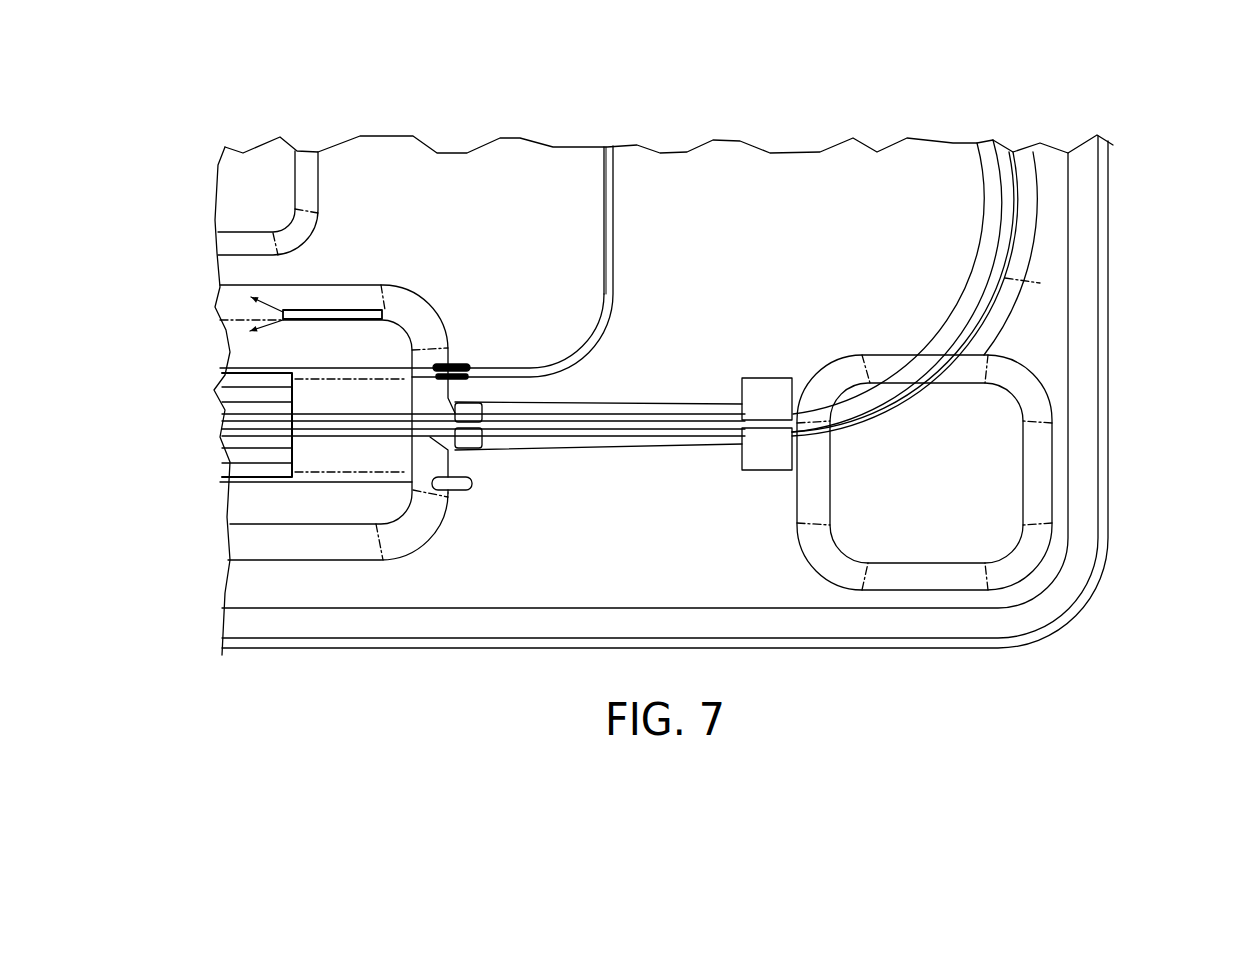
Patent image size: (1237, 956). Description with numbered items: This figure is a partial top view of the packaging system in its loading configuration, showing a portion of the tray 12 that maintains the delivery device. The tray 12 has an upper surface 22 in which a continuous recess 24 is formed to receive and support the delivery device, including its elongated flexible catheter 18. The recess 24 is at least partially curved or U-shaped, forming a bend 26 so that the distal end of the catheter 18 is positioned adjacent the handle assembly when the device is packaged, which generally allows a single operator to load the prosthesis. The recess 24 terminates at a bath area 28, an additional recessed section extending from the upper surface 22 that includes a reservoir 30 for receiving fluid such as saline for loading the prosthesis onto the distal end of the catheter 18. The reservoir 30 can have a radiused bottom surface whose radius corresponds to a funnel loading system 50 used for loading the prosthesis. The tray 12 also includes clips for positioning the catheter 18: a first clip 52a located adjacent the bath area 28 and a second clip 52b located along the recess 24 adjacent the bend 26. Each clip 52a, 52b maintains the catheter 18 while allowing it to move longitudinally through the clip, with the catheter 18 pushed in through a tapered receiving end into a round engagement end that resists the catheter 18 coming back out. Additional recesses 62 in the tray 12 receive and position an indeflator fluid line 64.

The tray 12 is at (1115, 191).
The catheter 18 is at (1010, 277).
The upper surface 22 is at (928, 183).
The recess 24 is at (642, 442).
The bend 26 is at (1040, 227).
The bath area 28 is at (340, 508).
The reservoir 30 is at (282, 513).
The funnel loading system 50 is at (277, 380).
The first clip 52a is at (470, 402).
The second clip 52b is at (742, 392).
The additional recess 62 is at (458, 363).
The indeflator fluid line 64 is at (615, 242).